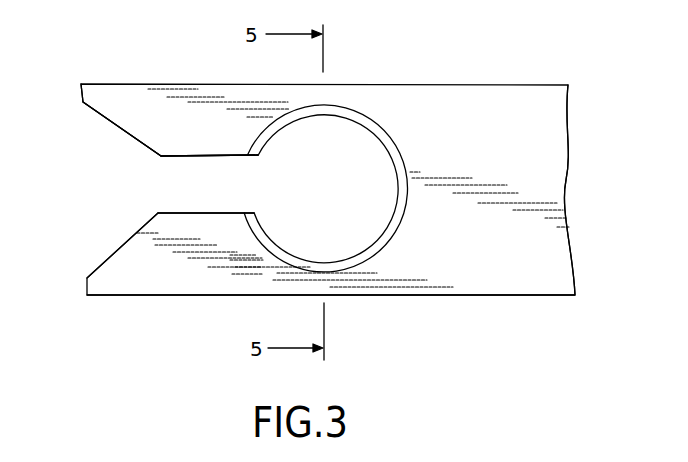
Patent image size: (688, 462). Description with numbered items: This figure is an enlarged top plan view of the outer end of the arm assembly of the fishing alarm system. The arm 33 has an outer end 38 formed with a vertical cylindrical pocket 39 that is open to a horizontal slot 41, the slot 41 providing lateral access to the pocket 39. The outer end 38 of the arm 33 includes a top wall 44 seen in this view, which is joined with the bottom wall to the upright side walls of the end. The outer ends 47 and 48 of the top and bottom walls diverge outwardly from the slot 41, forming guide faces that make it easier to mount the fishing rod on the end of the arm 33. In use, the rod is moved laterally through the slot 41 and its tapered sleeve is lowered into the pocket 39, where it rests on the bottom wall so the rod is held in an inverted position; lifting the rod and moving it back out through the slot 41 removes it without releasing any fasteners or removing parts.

The arm 33 is at (524, 84).
The outer end 38 is at (127, 83).
The vertical cylindrical pocket 39 is at (338, 196).
The horizontal slot 41 is at (146, 187).
The top wall 44 is at (465, 273).
The outer end of top wall 47 is at (117, 127).
The outer end of bottom wall 48 is at (113, 255).